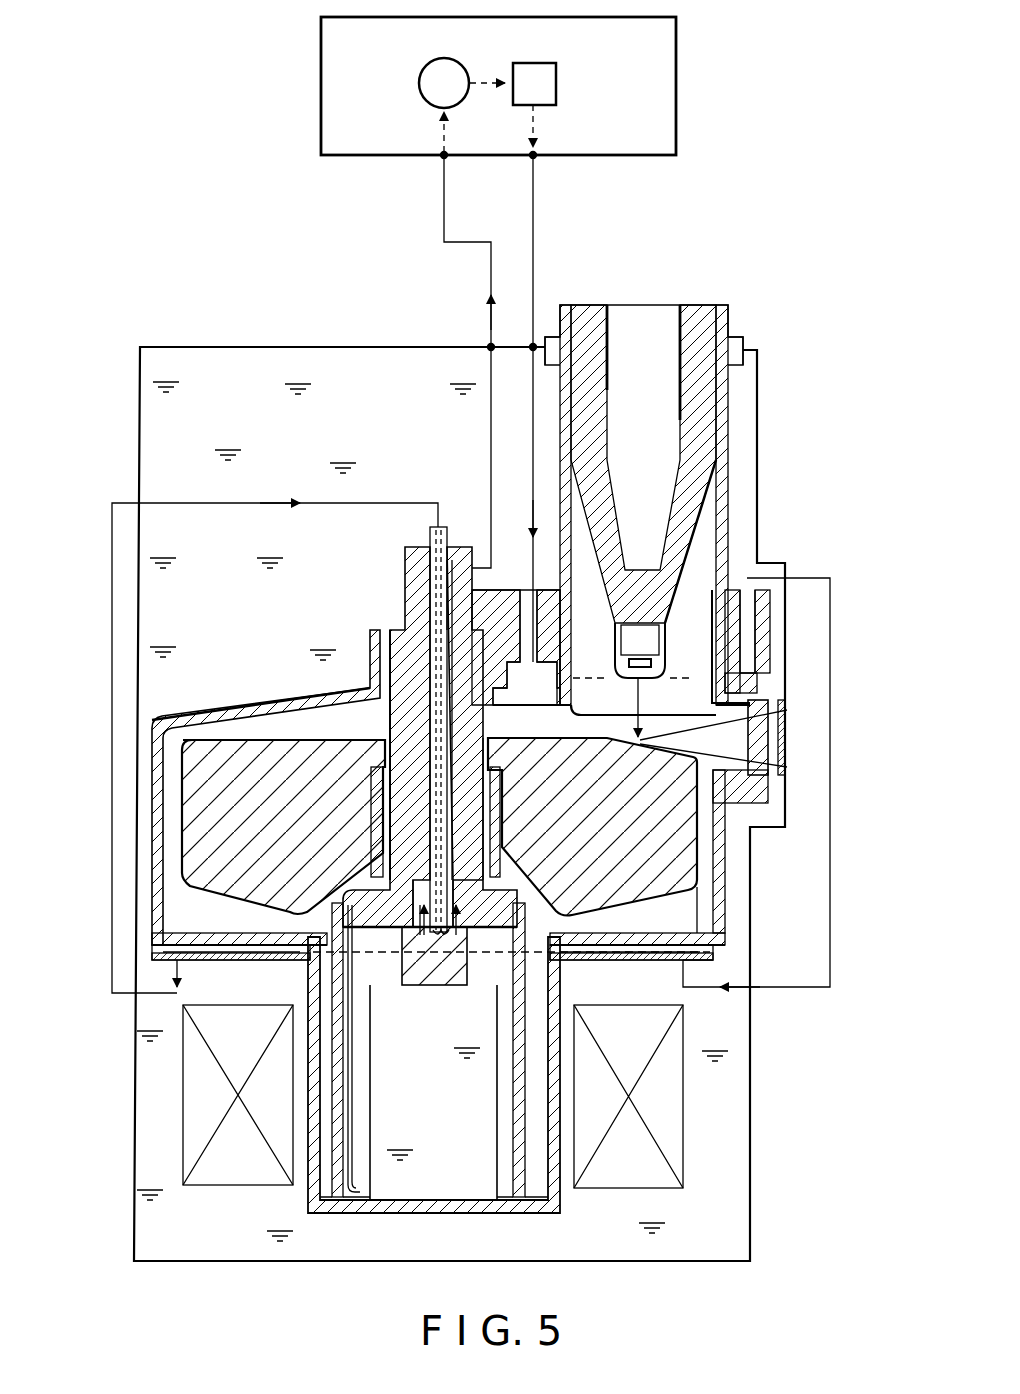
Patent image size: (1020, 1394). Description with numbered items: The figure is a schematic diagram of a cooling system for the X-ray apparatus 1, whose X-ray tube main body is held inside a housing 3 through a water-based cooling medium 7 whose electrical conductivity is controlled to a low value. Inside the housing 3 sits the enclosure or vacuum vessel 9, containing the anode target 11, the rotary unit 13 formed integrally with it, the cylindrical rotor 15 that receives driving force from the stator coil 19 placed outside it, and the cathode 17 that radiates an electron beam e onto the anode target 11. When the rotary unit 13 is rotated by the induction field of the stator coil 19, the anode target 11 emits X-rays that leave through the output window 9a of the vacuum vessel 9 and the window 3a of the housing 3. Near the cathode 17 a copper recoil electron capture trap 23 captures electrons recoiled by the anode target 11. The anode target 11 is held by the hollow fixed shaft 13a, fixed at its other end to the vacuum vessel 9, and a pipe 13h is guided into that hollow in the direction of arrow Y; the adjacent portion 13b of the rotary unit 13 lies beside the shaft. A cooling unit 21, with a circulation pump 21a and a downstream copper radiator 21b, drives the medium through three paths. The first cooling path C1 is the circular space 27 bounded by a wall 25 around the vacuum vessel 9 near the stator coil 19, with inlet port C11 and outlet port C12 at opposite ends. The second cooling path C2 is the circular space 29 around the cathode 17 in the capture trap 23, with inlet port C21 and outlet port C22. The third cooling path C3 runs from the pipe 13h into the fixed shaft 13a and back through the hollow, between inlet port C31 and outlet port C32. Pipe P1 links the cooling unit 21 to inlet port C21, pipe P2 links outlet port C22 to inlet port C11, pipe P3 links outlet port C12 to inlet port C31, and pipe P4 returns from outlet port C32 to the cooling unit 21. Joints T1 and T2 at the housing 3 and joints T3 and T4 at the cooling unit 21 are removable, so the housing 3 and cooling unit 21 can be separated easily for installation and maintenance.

The X-ray tube apparatus 1 is at (205, 182).
The housing 3 is at (273, 346).
The X-ray output window of housing 3a is at (787, 712).
The cooling medium 7 is at (167, 376).
The enclosure (vacuum vessel) 9 is at (217, 699).
The X-ray output window of vacuum vessel 9a is at (787, 770).
The anode target 11 is at (600, 766).
The rotary unit 13 is at (387, 611).
The fixed shaft 13a is at (411, 720).
The support flange 13b is at (375, 820).
The pipe 13h is at (468, 985).
The rotor 15 is at (320, 1149).
The cathode (electron gun) 17 is at (606, 668).
The stator (stator coil) 19 is at (680, 1088).
The cooling unit 21 is at (678, 45).
The circulation pump 21a is at (420, 83).
The heat exchanger (radiator) 21b is at (558, 78).
The recoil electron capture trap 23 is at (708, 706).
The wall 25 is at (244, 966).
The circular space 27 is at (306, 958).
The circular space 29 is at (758, 668).
The first cooling path C1 is at (692, 954).
The inlet port C11 is at (687, 977).
The outlet port C12 is at (160, 962).
The second cooling path C2 is at (745, 690).
The inlet port C21 is at (521, 598).
The outlet port C22 is at (748, 612).
The third cooling path C3 is at (449, 718).
The inlet port C31 is at (430, 527).
The outlet port C32 is at (472, 548).
The pipe P1 is at (534, 226).
The pipe P2 is at (832, 922).
The pipe P3 is at (184, 502).
The pipe P4 is at (490, 432).
The joint T1 is at (490, 347).
The joint T2 is at (536, 343).
The joint T3 is at (446, 160).
The joint T4 is at (535, 160).
The electron beam e is at (642, 718).
The arrow Y is at (735, 978).